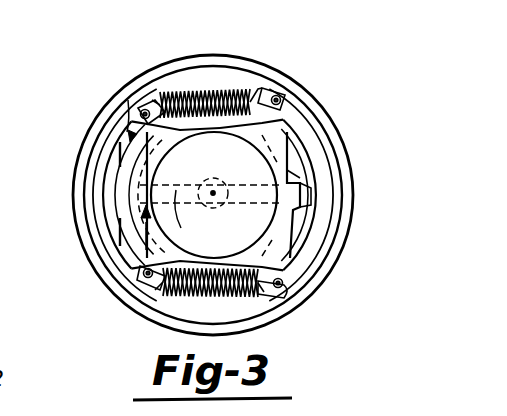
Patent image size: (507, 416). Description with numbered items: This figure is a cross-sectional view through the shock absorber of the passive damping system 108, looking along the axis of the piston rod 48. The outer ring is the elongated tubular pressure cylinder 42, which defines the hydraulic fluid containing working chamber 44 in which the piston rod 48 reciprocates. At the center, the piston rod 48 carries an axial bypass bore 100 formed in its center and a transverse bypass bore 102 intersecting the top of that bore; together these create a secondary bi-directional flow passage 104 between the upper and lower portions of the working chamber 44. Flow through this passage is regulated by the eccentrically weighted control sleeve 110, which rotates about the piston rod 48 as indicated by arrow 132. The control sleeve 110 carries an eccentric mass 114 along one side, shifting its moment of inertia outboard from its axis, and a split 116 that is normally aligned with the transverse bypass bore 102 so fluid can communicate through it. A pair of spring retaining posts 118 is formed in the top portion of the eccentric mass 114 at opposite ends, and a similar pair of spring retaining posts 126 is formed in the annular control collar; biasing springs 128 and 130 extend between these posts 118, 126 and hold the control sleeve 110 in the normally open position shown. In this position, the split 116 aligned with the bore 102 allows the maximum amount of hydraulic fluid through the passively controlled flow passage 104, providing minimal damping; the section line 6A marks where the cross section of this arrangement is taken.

The pressure cylinder 42 is at (263, 56).
The working chamber 44 is at (100, 252).
The piston rod 48 is at (204, 138).
The axial bypass bore 100 is at (211, 195).
The transverse bypass bore 102 is at (207, 211).
The bi-directional flow passage 104 is at (140, 270).
The passive damping system 108 is at (314, 192).
The control sleeve 110 is at (301, 178).
The eccentric mass 114 is at (314, 246).
The split 116 is at (133, 243).
The spring retaining posts 118 is at (285, 104).
The spring retaining posts 126 is at (147, 100).
The biasing spring 128 is at (190, 100).
The biasing spring 130 is at (272, 312).
The arrow 132 is at (140, 154).
The section line 6A is at (112, 233).